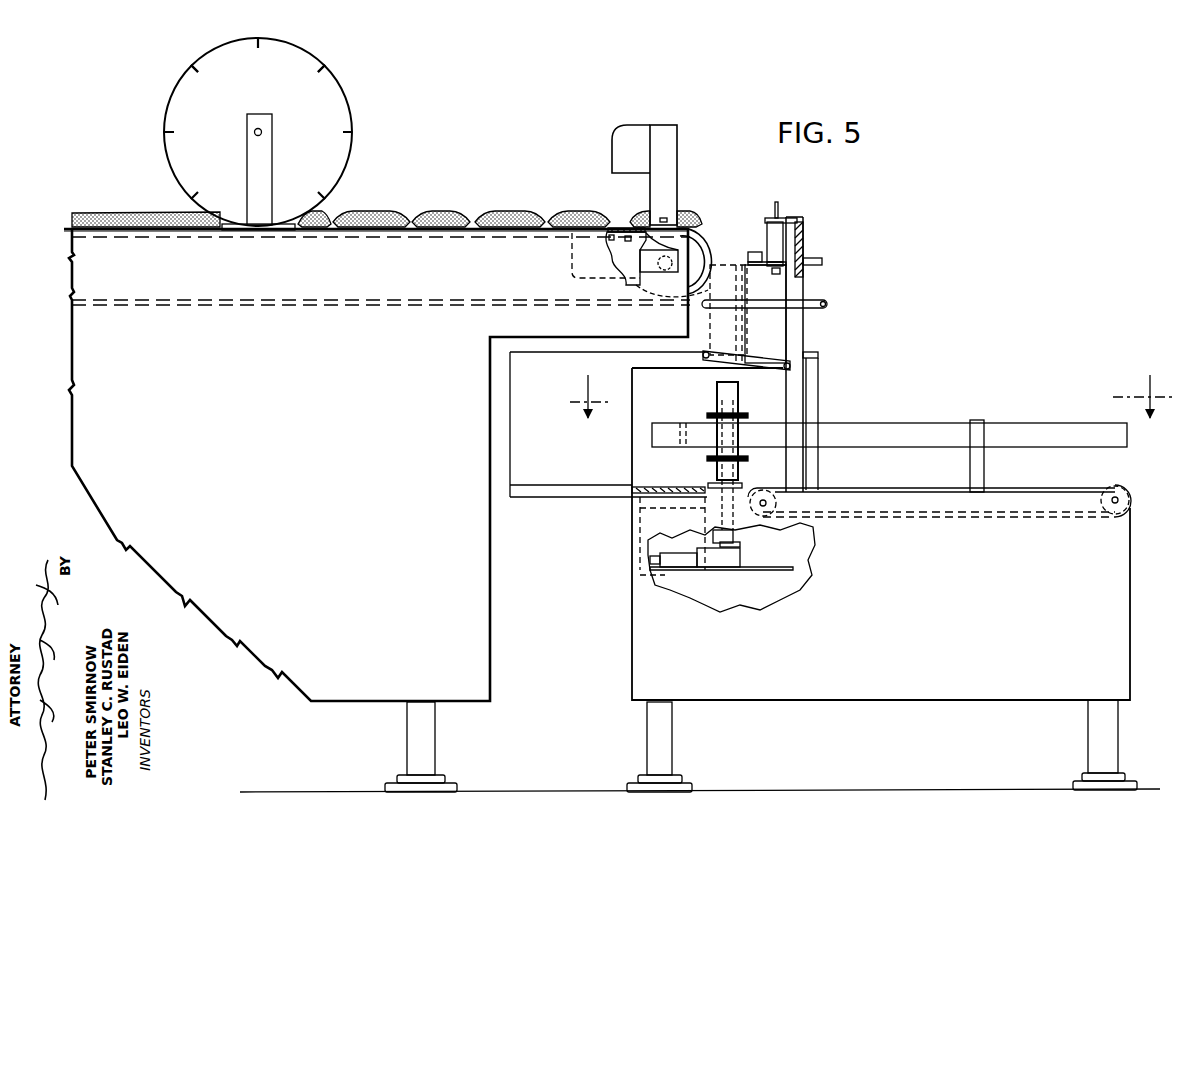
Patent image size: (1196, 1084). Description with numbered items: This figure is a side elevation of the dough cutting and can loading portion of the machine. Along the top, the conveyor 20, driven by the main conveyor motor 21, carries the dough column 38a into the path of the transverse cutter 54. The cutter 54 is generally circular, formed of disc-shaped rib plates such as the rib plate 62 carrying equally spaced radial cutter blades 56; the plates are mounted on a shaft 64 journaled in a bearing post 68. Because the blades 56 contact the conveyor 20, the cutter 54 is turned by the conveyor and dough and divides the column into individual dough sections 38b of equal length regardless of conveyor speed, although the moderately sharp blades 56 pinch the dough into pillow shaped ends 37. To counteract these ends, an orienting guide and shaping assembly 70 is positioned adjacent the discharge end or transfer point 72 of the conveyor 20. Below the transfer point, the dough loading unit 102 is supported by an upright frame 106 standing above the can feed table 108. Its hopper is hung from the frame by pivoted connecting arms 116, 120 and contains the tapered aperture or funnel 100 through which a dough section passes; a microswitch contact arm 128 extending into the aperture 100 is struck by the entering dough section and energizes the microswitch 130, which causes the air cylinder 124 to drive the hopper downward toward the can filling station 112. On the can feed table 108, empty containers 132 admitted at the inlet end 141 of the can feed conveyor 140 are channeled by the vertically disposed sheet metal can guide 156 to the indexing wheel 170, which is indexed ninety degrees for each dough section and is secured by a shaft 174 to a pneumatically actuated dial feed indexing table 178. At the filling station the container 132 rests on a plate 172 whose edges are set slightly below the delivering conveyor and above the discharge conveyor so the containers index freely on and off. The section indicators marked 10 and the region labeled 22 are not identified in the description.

The section line 10- 10 is at (873, 396).
The conveyor 20 is at (125, 232).
The main conveyor motor 21 is at (573, 268).
The hopper body 22 is at (305, 277).
The pillow shaped ends 37 is at (338, 207).
The dough column 38a is at (122, 212).
The individual dough section 38b is at (440, 208).
The transverse cutter 54 is at (350, 97).
The cutter blades 56 is at (172, 130).
The rib plate 62 is at (352, 112).
The shaft 64 is at (254, 136).
The bearing post 68 is at (272, 122).
The orienting guide and shaping assembly 70 is at (610, 162).
The discharge end or transfer point 72 is at (700, 246).
The tapered aperture or funnel 100 is at (643, 274).
The dough loading unit 102 is at (706, 322).
The upright frame 106 is at (806, 342).
The can feed table 108 is at (916, 566).
The can filling station 112 is at (706, 480).
The connecting arm 116 is at (812, 306).
The connecting arm 120 is at (723, 366).
The air cylinder 124 is at (780, 245).
The microswitch contact arm 128 is at (745, 272).
The microswitch 130 is at (753, 252).
The container 132 is at (738, 392).
The can feed conveyor 140 is at (898, 484).
The inlet end 141 is at (1117, 484).
The can guide 156 is at (912, 433).
The indexing wheel 170 is at (746, 413).
The plate 172 is at (750, 485).
The shaft 174 is at (733, 538).
The dial feed indexing table 178 is at (740, 557).